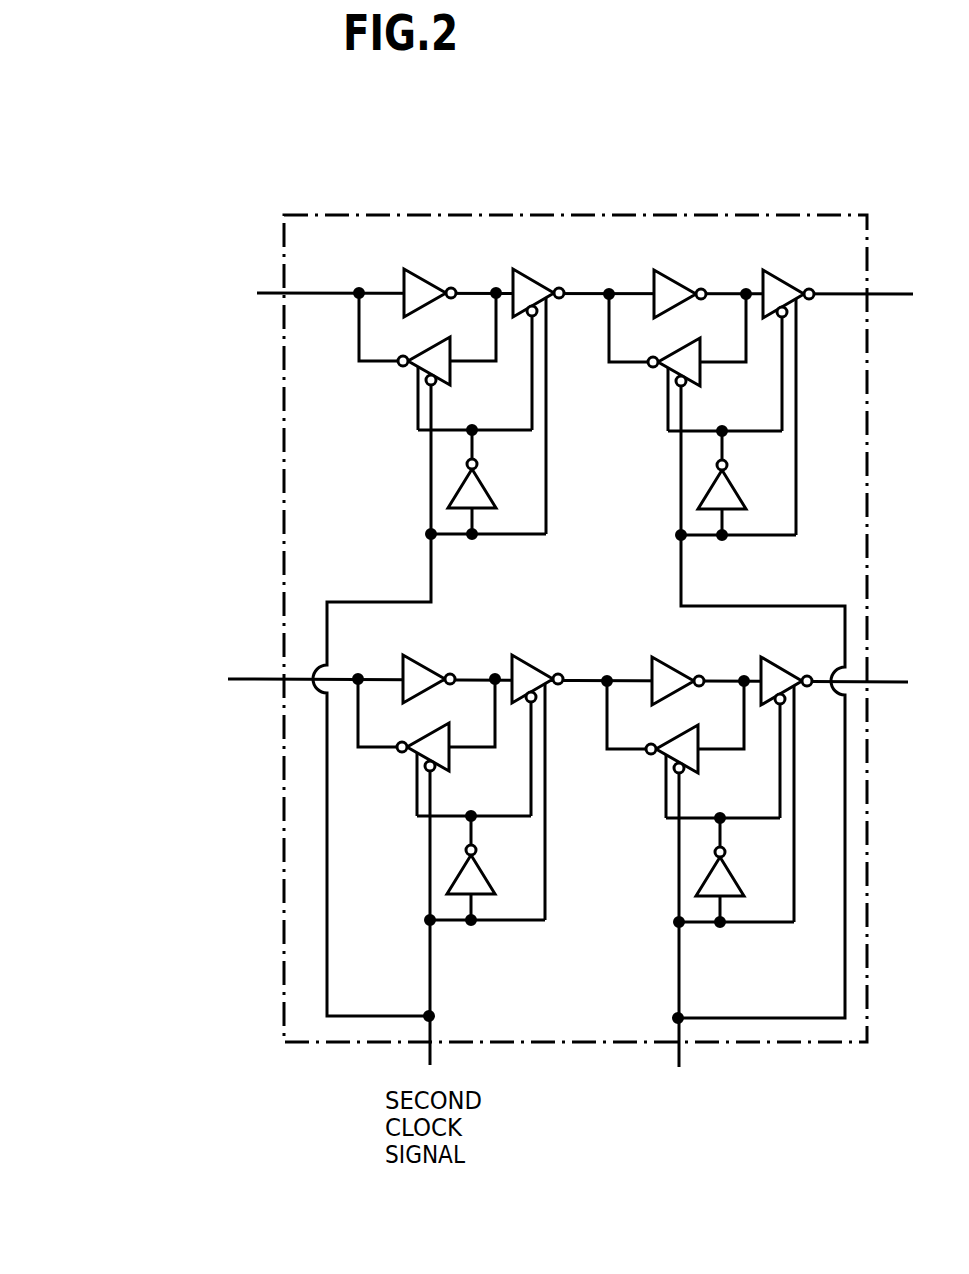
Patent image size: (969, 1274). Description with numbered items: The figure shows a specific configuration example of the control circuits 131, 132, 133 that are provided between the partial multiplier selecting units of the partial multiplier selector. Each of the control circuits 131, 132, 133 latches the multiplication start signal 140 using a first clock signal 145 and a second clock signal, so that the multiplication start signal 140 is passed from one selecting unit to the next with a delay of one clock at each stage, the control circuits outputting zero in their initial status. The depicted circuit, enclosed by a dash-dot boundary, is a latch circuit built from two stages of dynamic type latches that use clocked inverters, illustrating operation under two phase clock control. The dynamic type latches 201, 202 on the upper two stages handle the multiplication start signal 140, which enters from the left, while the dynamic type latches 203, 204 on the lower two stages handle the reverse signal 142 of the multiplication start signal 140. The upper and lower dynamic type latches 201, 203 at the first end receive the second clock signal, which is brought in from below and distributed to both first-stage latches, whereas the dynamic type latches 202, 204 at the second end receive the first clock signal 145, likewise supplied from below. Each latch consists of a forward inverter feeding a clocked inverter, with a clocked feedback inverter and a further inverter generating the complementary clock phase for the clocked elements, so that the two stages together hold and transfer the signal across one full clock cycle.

The control circuit 131 is at (583, 559).
The control circuit 132 is at (583, 559).
The control circuit 133 is at (725, 215).
The multiplication start signal 140 is at (475, 281).
The reverse signal 142 is at (500, 662).
The first clock signal 145 is at (712, 1045).
The dynamic type latch 201 is at (470, 287).
The dynamic type latch 202 is at (716, 288).
The dynamic type latch 203 is at (468, 669).
The dynamic type latch 204 is at (723, 678).